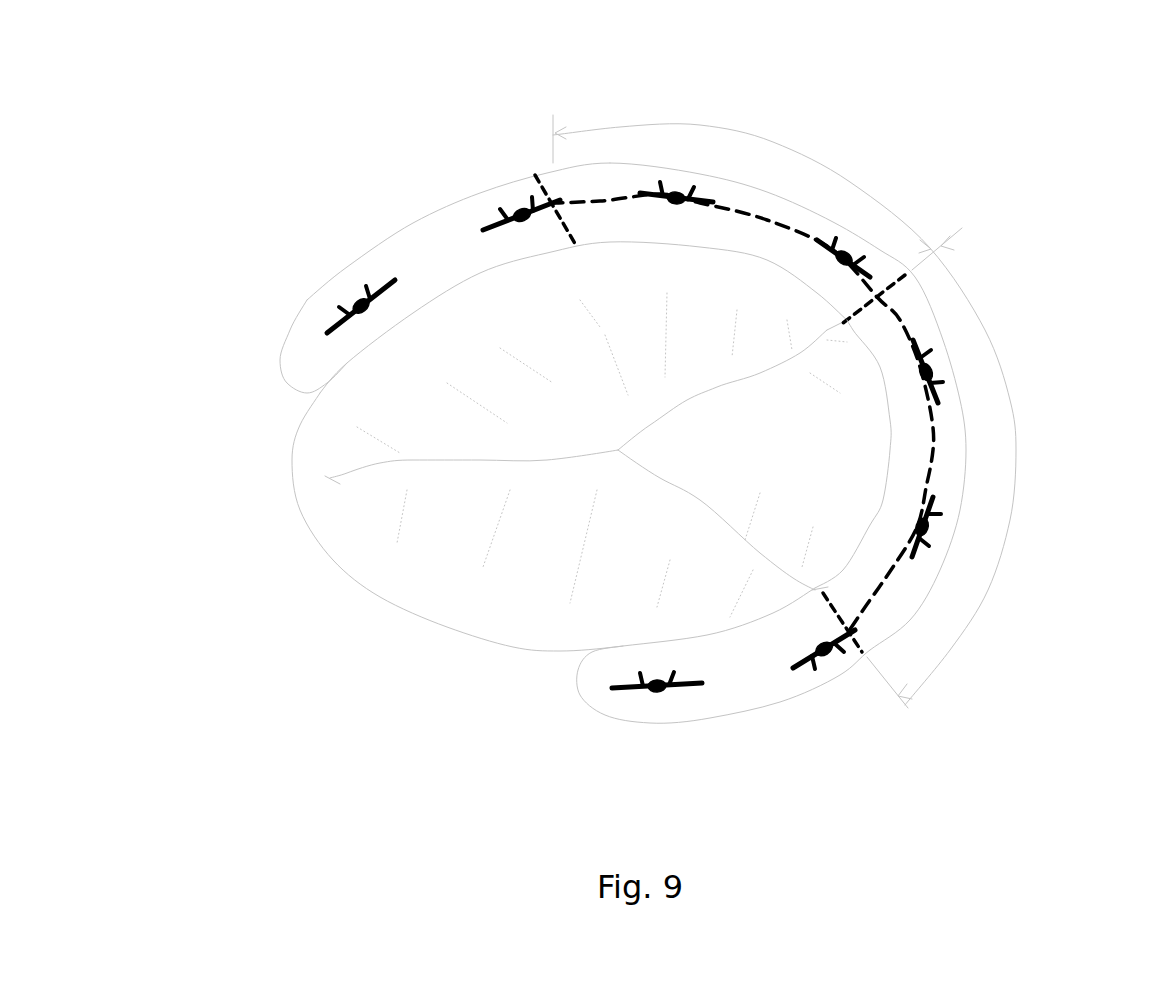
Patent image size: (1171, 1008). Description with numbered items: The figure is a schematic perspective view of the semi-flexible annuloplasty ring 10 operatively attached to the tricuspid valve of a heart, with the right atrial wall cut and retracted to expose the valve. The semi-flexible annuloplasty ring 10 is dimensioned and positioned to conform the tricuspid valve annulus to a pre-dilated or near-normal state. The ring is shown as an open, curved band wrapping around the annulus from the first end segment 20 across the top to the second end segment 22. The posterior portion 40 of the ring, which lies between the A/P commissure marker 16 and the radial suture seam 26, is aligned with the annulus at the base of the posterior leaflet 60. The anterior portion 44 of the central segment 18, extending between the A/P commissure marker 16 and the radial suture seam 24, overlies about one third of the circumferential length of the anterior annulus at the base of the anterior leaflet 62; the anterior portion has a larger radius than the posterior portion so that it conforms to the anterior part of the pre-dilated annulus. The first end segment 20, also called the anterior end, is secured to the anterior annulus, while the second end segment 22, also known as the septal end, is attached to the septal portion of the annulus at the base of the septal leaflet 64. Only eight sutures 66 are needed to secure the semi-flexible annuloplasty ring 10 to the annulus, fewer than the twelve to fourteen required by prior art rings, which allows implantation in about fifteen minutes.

The semi-flexible annuloplasty ring 10 is at (806, 709).
The A/P commissure marker 16 is at (890, 288).
The central segment 18 is at (913, 312).
The first end segment 20 is at (319, 372).
The second end segment 22 is at (710, 702).
The radial suture seam 24 is at (542, 180).
The radial suture seam 26 is at (868, 648).
The posterior portion 40 is at (1042, 461).
The anterior portion 44 is at (781, 133).
The posterior leaflet 60 is at (843, 473).
The anterior leaflet 62 is at (508, 343).
The septal leaflet 64 is at (597, 536).
The sutures 66 is at (843, 250).